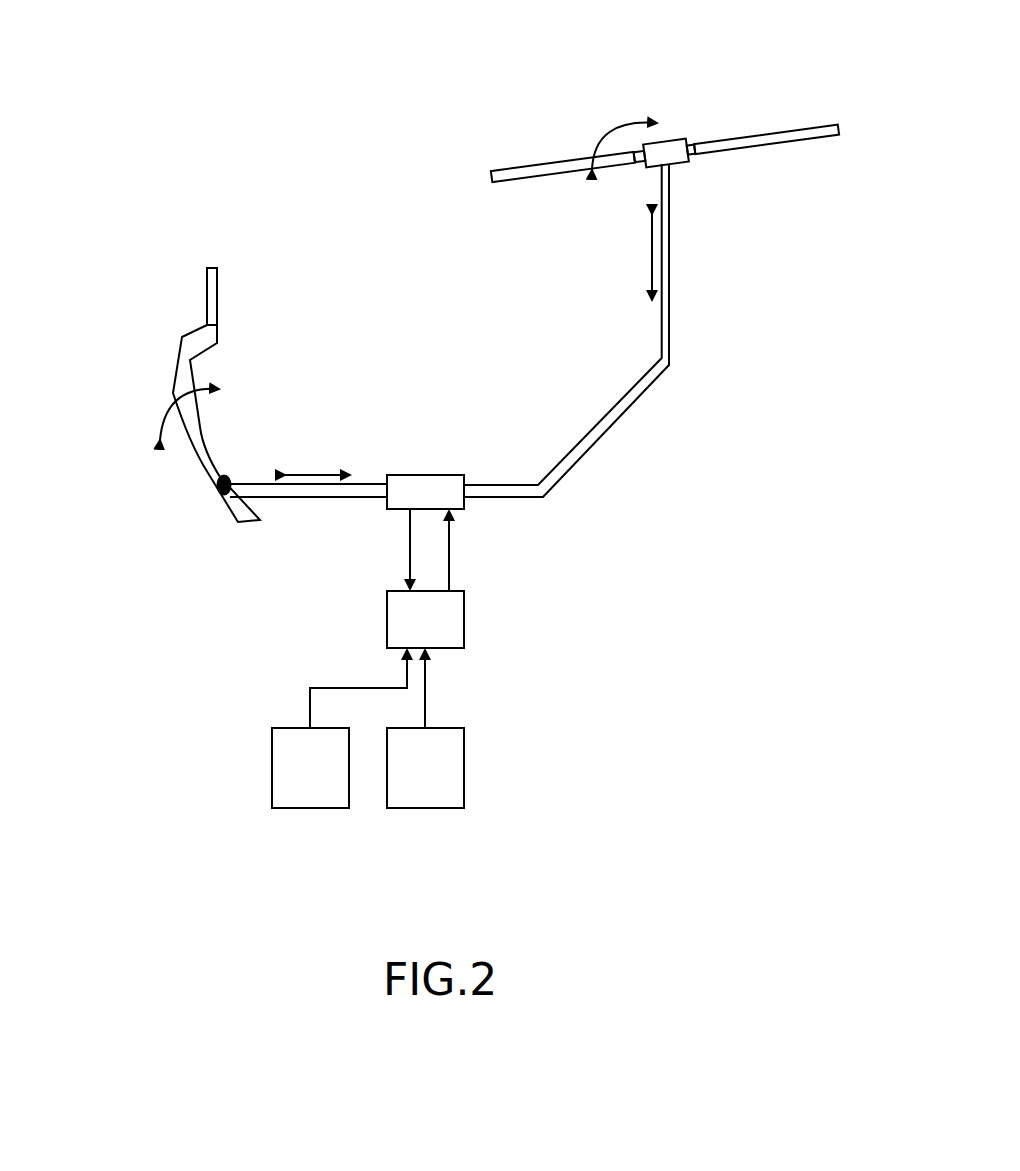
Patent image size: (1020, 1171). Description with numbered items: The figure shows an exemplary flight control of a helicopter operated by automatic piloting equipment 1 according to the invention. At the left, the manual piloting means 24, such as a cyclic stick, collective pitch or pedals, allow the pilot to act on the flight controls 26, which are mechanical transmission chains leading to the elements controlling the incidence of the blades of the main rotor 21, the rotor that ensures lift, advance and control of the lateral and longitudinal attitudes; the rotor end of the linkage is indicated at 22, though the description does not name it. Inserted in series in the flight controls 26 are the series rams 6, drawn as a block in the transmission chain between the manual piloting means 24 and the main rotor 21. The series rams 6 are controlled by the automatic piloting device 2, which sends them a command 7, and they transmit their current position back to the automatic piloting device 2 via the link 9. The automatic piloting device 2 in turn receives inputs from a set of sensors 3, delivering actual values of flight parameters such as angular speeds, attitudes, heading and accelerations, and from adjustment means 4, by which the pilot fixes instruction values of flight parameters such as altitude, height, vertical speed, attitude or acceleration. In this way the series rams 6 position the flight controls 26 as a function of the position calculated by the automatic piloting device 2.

The automatic piloting equipment 1 is at (208, 777).
The automatic piloting device 2 is at (455, 613).
The set of sensors 3 is at (443, 783).
The adjustment means 4 is at (323, 780).
The series rams 6 is at (415, 487).
The signal to actuator 7 is at (452, 533).
The link 9 is at (410, 552).
The main rotor 21 is at (667, 142).
The lever bar 22 is at (498, 175).
The manual piloting means 24 is at (213, 280).
The flight controls 26 is at (620, 405).